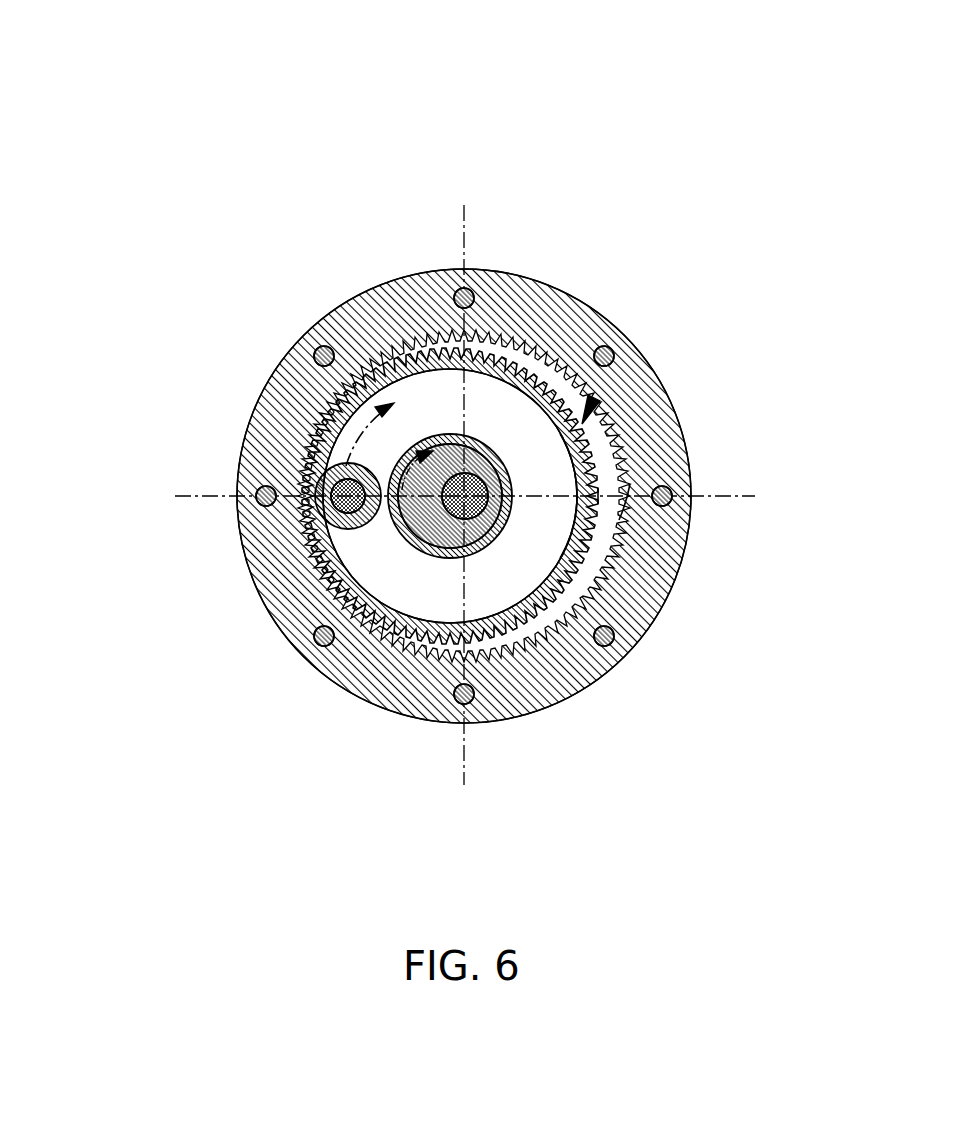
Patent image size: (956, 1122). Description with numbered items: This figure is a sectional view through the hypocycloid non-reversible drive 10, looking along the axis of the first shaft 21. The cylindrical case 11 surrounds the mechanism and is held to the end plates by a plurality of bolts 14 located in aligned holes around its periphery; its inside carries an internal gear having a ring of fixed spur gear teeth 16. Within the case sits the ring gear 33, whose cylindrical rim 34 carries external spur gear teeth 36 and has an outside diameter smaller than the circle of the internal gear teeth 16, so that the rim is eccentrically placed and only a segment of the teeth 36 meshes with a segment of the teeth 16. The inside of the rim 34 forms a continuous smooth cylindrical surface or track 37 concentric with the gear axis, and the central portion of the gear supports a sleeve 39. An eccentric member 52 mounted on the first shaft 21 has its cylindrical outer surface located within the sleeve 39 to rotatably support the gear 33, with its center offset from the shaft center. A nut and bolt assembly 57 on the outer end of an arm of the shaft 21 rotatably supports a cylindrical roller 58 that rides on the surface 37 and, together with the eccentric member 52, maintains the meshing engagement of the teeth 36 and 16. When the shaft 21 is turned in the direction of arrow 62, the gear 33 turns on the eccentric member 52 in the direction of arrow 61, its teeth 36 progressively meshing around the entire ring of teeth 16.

The hypocycloid non-reversible drive 10 is at (284, 118).
The case 11 is at (322, 318).
The bolts 14 is at (594, 398).
The fixed spur gear teeth 16 is at (567, 532).
The first shaft 21 is at (493, 537).
The ring gear 33 is at (574, 445).
The cylindrical rim 34 is at (600, 493).
The external spur gear teeth 36 is at (655, 350).
The cylindrical surface or track 37 is at (585, 555).
The sleeve 39 is at (393, 520).
The eccentric member 52 is at (422, 522).
The nut and bolt assembly 57 is at (345, 508).
The cylindrical roller 58 is at (262, 392).
The arrow 61 is at (314, 356).
The arrow 62 is at (380, 514).